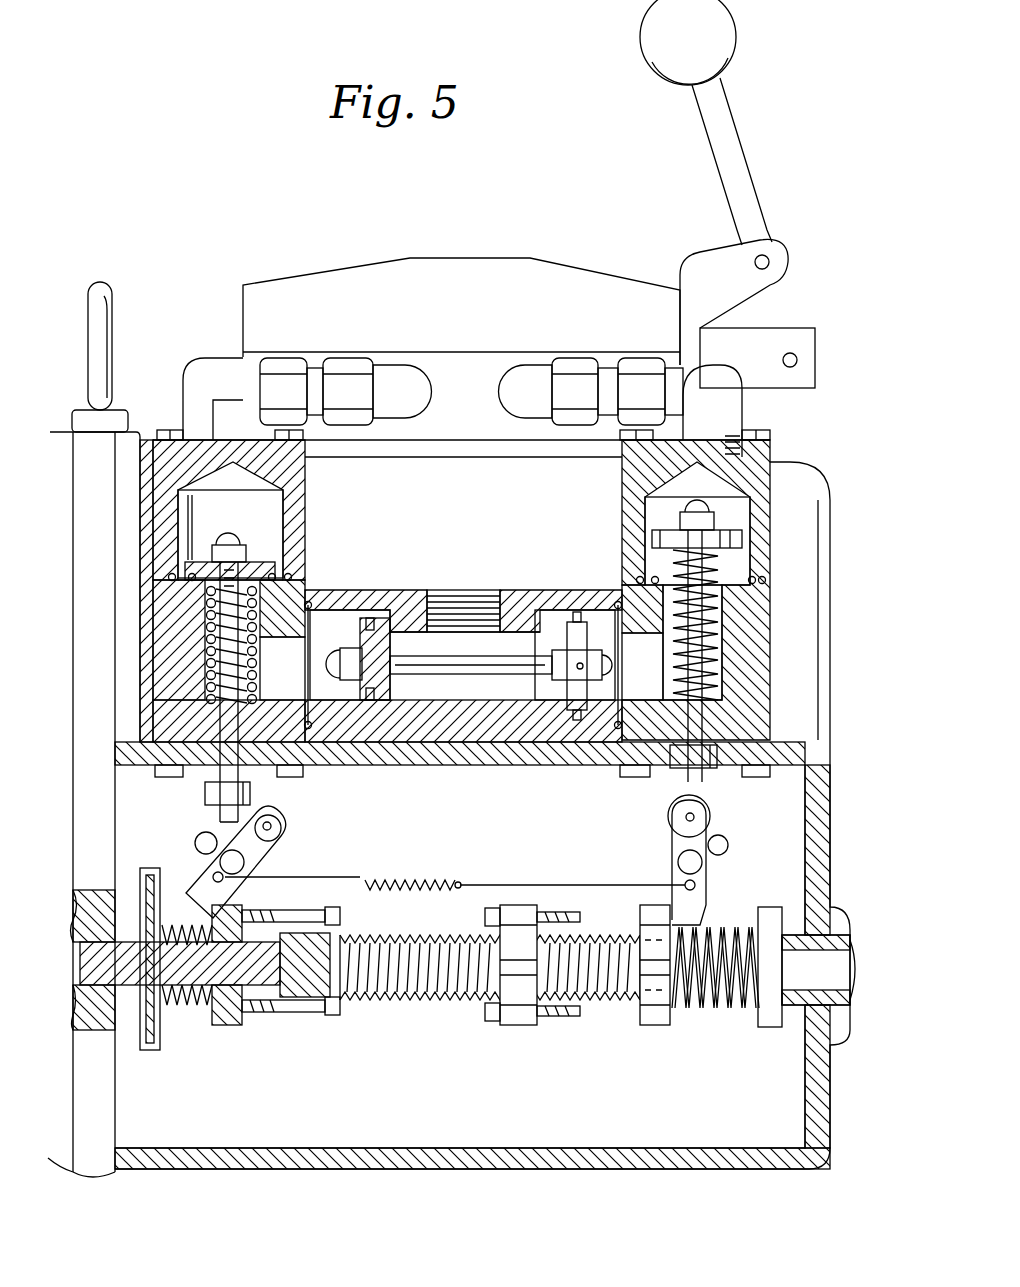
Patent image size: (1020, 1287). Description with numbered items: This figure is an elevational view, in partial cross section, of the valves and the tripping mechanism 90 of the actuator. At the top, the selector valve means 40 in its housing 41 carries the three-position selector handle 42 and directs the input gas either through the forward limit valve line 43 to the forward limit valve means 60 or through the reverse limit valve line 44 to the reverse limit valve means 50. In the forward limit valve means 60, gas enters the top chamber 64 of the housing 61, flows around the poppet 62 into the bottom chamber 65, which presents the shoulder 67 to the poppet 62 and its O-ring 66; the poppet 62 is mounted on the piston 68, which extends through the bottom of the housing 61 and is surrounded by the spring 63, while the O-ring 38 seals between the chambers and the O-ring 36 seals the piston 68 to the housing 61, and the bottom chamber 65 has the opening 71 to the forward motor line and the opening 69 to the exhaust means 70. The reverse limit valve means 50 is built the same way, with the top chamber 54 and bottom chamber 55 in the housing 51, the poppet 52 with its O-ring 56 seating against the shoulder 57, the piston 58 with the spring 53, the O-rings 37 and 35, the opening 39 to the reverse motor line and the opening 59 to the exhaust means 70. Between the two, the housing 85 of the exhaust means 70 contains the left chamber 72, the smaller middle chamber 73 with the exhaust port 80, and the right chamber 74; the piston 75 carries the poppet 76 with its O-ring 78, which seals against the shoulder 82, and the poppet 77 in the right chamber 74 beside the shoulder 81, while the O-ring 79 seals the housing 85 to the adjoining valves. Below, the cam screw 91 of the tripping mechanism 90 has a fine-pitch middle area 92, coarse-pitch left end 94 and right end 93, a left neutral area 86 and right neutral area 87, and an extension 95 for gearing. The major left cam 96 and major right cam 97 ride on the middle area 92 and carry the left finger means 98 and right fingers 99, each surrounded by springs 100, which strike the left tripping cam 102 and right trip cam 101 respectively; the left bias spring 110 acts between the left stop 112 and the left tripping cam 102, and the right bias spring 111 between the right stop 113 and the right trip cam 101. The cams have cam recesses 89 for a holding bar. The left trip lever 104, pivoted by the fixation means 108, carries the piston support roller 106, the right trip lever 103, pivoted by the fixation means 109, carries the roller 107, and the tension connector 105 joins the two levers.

The O-ring 35 is at (740, 707).
The O-ring 36 is at (207, 705).
The O-ring 37 is at (755, 581).
The O-ring 38 is at (280, 566).
The opening 39 is at (730, 602).
The selector valve means 40 is at (268, 278).
The housing 41 is at (770, 457).
The selector handle 42 is at (755, 160).
The forward limit valve line 43 is at (195, 358).
The reverse limit valve line 44 is at (742, 414).
The reverse limit valve means 50 is at (618, 488).
The housing 51 is at (688, 536).
The poppet 52 is at (655, 518).
The spring 53 is at (735, 622).
The top chamber 54 is at (645, 500).
The bottom chamber 55 is at (722, 652).
The O-ring 56 is at (660, 546).
The shoulder 57 is at (690, 572).
The piston 58 is at (672, 560).
The opening 59 is at (658, 686).
The forward limit valve means 60 is at (315, 491).
The housing 61 is at (178, 720).
The poppet 62 is at (262, 548).
The spring 63 is at (206, 636).
The top chamber 64 is at (265, 518).
The bottom chamber 65 is at (168, 592).
The O-ring 66 is at (250, 555).
The shoulder 67 is at (192, 580).
The piston 68 is at (228, 665).
The opening 69 is at (296, 686).
The exhaust means 70 is at (447, 588).
The opening 71 is at (168, 605).
The left chamber 72 is at (352, 712).
The middle chamber 73 is at (420, 690).
The right chamber 74 is at (555, 700).
The piston 75 is at (440, 665).
The poppet 76 is at (368, 684).
The poppet 77 is at (565, 683).
The O-ring 78 is at (393, 625).
The O-ring 79 is at (310, 732).
The exhaust port 80 is at (430, 605).
The shoulder 81 is at (545, 720).
The shoulder 82 is at (378, 720).
The housing 85 is at (390, 598).
The left neutral area 86 is at (243, 1030).
The right neutral area 87 is at (640, 1015).
The cam recesses 89 is at (655, 912).
The tripping mechanism 90 is at (345, 1050).
The cam screw 91 is at (432, 1008).
The middle area 92 is at (385, 1010).
The right end 93 is at (700, 1015).
The left end 94 is at (195, 1015).
The extension 95 is at (830, 981).
The major left cam 96 is at (275, 1030).
The major right cam 97 is at (520, 1030).
The left finger means 98 is at (318, 905).
The right fingers 99 is at (588, 912).
The springs 100 is at (232, 912).
The right trip cam 101 is at (652, 1030).
The left tripping cam 102 is at (215, 1030).
The right trip lever 103 is at (700, 828).
The left trip lever 104 is at (282, 843).
The tension connector 105 is at (425, 872).
The piston support roller 106 is at (283, 828).
The roller 107 is at (704, 808).
The fixation means 108 is at (244, 862).
The fixation means 109 is at (702, 862).
The left bias spring 110 is at (172, 1040).
The right bias spring 111 is at (740, 1020).
The left stop 112 is at (150, 1052).
The right stop 113 is at (770, 1027).